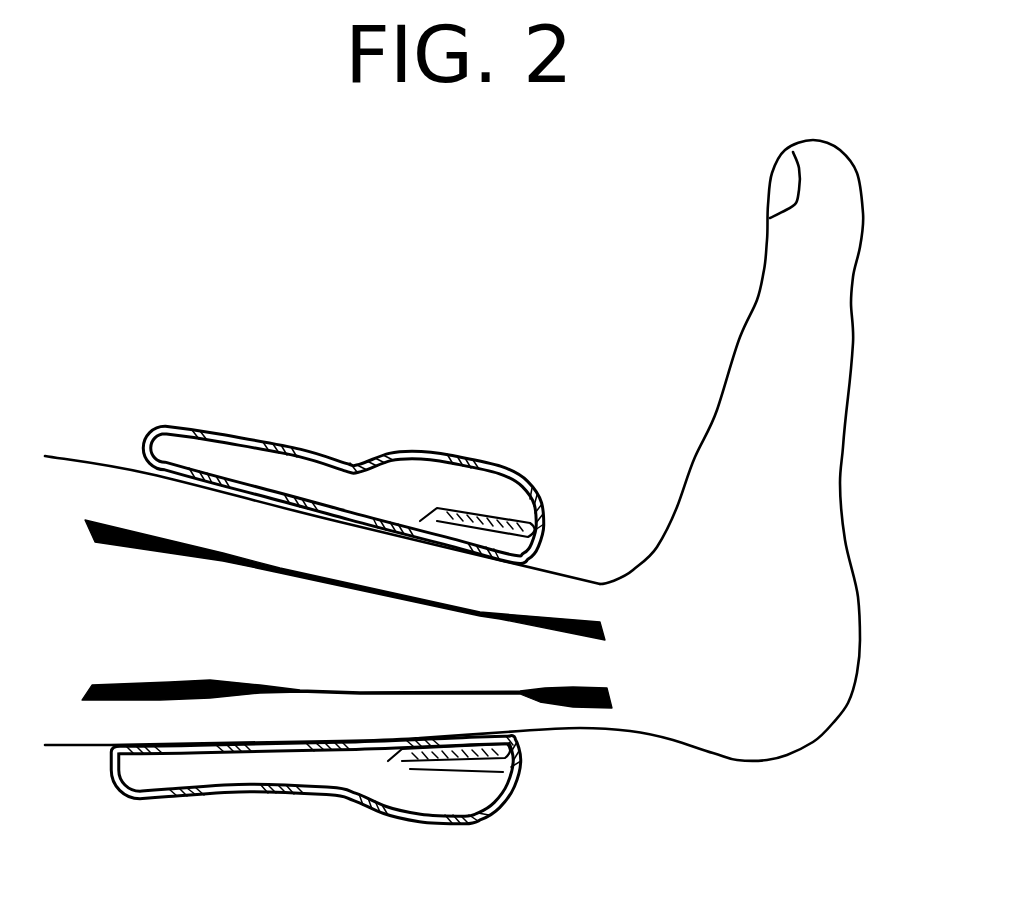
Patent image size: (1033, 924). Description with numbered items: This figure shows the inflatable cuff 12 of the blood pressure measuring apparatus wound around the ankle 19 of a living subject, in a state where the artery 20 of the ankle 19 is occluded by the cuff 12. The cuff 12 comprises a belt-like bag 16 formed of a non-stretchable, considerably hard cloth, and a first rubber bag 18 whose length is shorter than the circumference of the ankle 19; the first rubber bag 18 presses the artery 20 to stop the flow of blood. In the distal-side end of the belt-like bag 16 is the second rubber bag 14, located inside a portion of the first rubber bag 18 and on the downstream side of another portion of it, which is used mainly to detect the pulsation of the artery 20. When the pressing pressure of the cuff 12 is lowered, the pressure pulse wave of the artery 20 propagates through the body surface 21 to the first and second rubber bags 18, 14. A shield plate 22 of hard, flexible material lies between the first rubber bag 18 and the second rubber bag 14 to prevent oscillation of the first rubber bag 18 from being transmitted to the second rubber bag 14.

The inflatable cuff 12 is at (388, 437).
The second rubber bag 14 is at (547, 548).
The belt-like bag 16 is at (358, 455).
The first rubber bag 18 is at (238, 457).
The ankle 19 is at (525, 715).
The artery 20 is at (103, 523).
The body surface 21 is at (293, 493).
The shield plate 22 is at (486, 510).